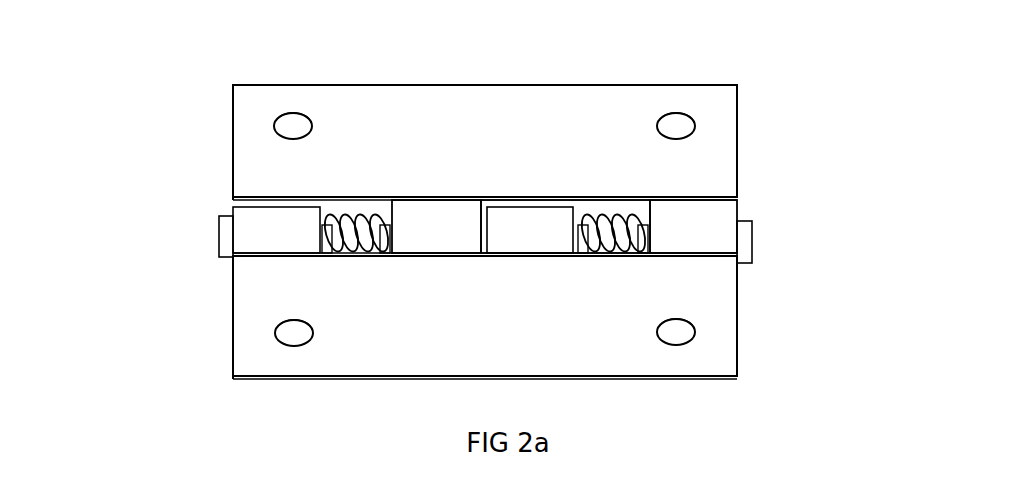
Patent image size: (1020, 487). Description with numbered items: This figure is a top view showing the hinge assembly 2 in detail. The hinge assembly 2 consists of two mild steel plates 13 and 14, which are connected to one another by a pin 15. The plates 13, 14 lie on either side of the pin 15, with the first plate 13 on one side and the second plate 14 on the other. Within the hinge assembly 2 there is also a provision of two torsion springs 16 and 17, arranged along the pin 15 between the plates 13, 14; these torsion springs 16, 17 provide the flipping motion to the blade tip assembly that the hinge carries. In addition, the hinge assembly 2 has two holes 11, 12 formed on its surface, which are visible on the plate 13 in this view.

The hinge assembly 2 is at (188, 198).
The hole 11 is at (311, 130).
The hole 12 is at (695, 129).
The mild steel plate 13 is at (738, 173).
The mild steel plate 14 is at (740, 318).
The pin 15 is at (756, 244).
The torsion spring 16 is at (621, 241).
The torsion spring 17 is at (372, 241).